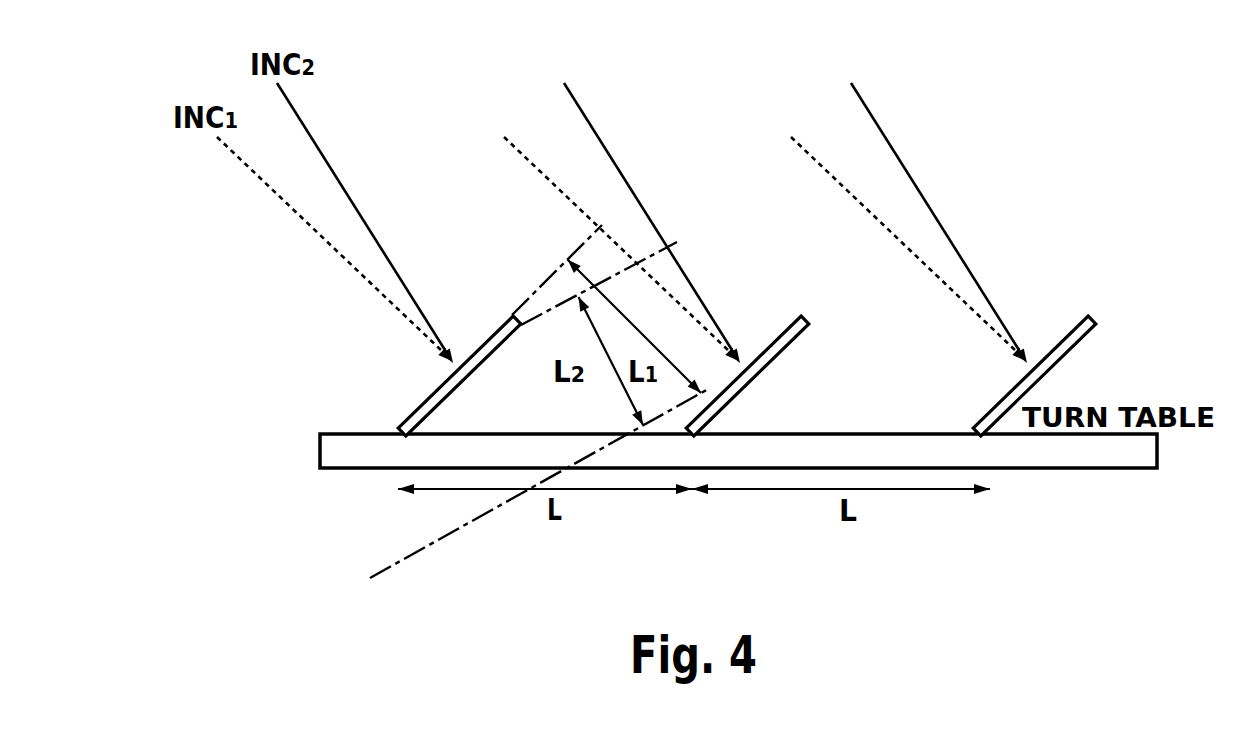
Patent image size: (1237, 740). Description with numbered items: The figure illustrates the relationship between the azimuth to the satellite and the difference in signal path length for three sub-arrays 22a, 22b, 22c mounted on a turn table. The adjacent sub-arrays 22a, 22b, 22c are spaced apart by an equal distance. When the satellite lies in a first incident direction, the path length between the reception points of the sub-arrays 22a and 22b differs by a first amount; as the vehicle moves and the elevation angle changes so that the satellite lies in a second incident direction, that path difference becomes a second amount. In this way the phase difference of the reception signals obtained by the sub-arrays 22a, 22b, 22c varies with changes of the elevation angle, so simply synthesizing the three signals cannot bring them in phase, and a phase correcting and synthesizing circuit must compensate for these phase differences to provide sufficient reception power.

The sub-array 22a is at (412, 408).
The sub-array 22b is at (777, 358).
The sub-array 22c is at (1057, 358).